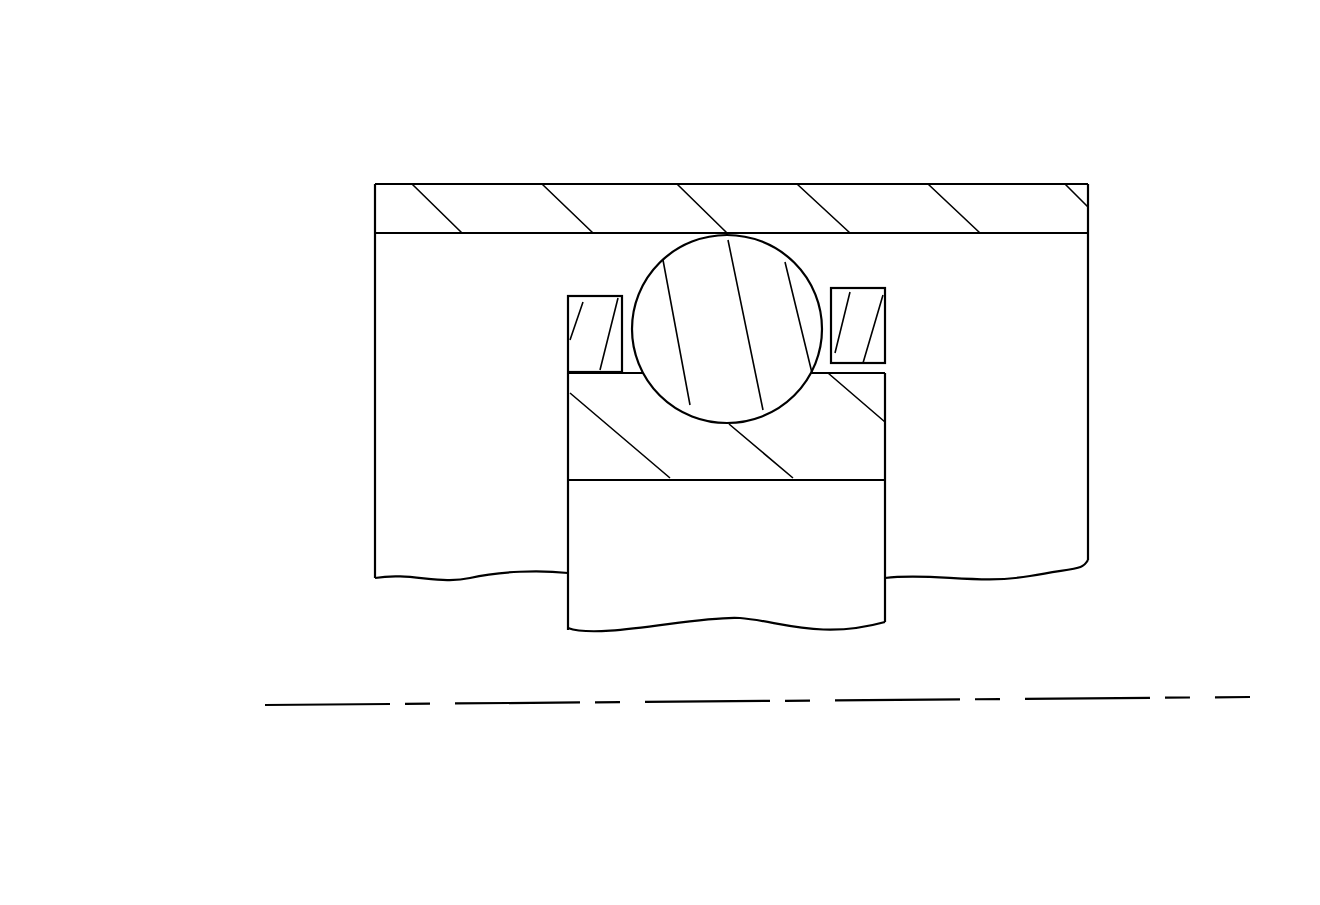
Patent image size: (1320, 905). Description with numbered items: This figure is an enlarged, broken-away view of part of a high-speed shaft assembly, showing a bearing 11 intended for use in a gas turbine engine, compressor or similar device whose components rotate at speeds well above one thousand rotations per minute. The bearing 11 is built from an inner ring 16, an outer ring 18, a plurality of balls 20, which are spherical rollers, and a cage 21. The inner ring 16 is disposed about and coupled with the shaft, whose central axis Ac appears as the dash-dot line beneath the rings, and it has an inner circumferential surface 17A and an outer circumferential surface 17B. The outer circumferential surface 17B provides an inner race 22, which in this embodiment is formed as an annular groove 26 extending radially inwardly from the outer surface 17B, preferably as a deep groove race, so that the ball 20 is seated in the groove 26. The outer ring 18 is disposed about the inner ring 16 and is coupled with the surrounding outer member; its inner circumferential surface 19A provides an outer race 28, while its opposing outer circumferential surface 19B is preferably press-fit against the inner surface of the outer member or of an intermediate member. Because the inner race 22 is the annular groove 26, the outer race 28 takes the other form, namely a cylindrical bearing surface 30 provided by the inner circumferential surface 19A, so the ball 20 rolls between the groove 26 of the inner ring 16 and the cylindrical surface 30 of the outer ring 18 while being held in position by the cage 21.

The bearing 11 is at (288, 74).
The inner ring 16 is at (528, 475).
The inner circumferential surface 17A is at (647, 484).
The outer circumferential surface 17B is at (851, 352).
The outer ring 18 is at (361, 242).
The inner circumferential surface 19A is at (421, 236).
The outer circumferential surface 19B is at (458, 184).
The ball 20 is at (714, 236).
The cage 21 is at (884, 324).
The inner race 22 is at (721, 418).
The annular groove 26 is at (701, 402).
The outer race 28 is at (488, 240).
The cylindrical bearing surface 30 is at (1022, 235).
The central axis Ac is at (1218, 697).